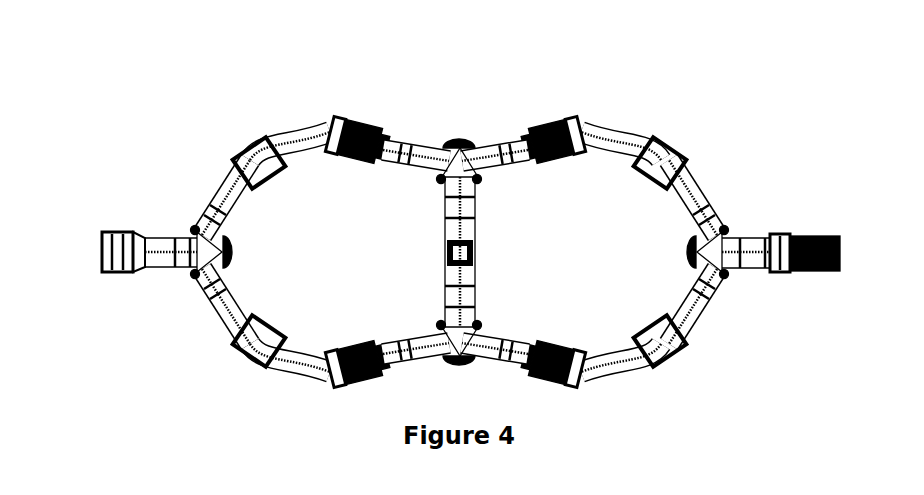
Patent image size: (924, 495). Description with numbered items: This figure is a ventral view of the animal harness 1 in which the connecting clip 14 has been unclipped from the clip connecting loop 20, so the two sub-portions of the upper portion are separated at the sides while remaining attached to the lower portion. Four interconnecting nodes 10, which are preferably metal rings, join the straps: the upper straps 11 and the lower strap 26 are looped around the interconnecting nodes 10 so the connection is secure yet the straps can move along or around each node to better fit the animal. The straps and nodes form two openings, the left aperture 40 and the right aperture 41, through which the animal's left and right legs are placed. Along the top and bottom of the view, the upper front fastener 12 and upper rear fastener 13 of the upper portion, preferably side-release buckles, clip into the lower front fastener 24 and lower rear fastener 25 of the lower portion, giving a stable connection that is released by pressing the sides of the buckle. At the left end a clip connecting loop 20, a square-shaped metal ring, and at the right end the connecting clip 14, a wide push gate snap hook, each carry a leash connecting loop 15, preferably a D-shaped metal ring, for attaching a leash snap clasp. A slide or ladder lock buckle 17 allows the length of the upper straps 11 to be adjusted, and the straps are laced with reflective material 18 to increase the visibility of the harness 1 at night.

The harness 1 is at (457, 253).
The interconnecting node 10 is at (459, 139).
The upper strap 11 is at (626, 137).
The upper front fastener 12 is at (345, 118).
The upper rear fastener 13 is at (340, 388).
The connecting clip 14 is at (830, 267).
The leash connecting loop 15 is at (145, 245).
The slide or ladder lock buckle 17 is at (685, 160).
The reflective material 18 is at (690, 197).
The clip connecting loop 20 is at (103, 248).
The lower front fastener 24 is at (383, 138).
The lower rear fastener 25 is at (383, 372).
The lower strap 26 is at (424, 141).
The left aperture 40 is at (665, 252).
The right aperture 41 is at (301, 253).